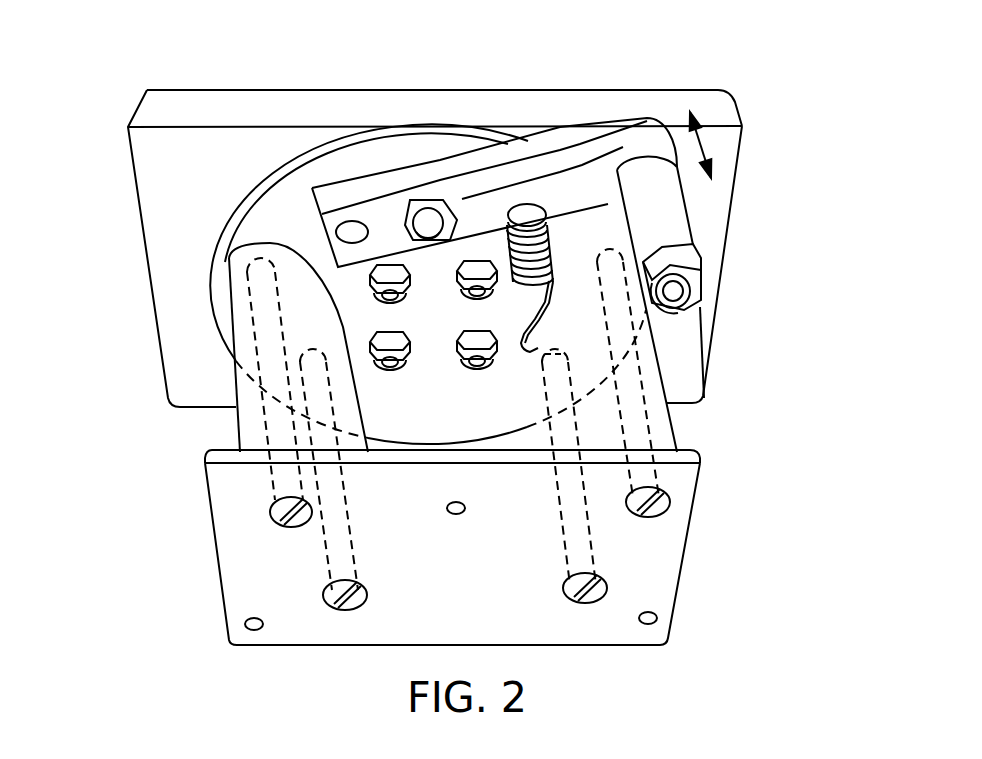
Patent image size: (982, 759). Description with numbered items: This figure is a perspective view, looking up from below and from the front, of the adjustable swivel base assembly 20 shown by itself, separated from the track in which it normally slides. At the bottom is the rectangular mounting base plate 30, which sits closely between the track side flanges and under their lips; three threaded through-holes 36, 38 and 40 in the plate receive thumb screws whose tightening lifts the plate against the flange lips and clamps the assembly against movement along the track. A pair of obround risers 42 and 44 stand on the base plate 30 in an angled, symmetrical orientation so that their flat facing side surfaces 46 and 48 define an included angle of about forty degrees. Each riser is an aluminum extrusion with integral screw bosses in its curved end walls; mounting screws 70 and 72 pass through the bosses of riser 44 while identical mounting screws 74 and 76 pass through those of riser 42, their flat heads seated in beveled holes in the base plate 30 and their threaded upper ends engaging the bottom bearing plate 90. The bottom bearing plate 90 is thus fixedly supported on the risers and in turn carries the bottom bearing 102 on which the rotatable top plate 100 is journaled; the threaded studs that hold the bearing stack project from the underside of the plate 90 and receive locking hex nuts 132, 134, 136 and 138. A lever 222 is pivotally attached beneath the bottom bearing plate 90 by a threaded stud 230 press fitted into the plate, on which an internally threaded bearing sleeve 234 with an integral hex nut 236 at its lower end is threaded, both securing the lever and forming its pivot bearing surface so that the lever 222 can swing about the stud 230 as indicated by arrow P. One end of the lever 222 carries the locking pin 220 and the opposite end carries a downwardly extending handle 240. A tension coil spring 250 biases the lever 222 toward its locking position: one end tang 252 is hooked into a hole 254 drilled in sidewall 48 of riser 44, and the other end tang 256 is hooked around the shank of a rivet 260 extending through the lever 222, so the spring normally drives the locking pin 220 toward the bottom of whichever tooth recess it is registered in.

The base assembly 20 is at (125, 53).
The mounting base plate 30 is at (200, 576).
The threaded through-hole 36 is at (257, 627).
The threaded through-hole 38 is at (456, 510).
The threaded through-hole 40 is at (649, 619).
The obround riser 42 is at (227, 420).
The obround riser 44 is at (688, 430).
The flat facing side surface 46 is at (353, 395).
The flat facing side surface 48 is at (527, 392).
The mounting screw 70 is at (650, 510).
The mounting screw 72 is at (588, 602).
The mounting screw 74 is at (290, 517).
The mounting screw 76 is at (350, 603).
The bottom bearing plate 90 is at (270, 178).
The rotatable top plate 100 is at (267, 78).
The bottom bearing 102 is at (470, 112).
The locking hex nut 132 is at (372, 282).
The locking hex nut 134 is at (403, 365).
The locking hex nut 136 is at (470, 262).
The locking hex nut 138 is at (482, 372).
The locking pin 220 is at (330, 225).
The lever 222 is at (598, 113).
The threaded stud 230 is at (410, 232).
The bearing sleeve 234 is at (419, 184).
The hex nut 236 is at (405, 226).
The handle 240 is at (702, 211).
The tension coil spring 250 is at (574, 283).
The end tang 252 is at (541, 357).
The hole 254 is at (558, 320).
The end tang 256 is at (531, 213).
The rivet 260 is at (531, 220).
The arrow P is at (702, 140).